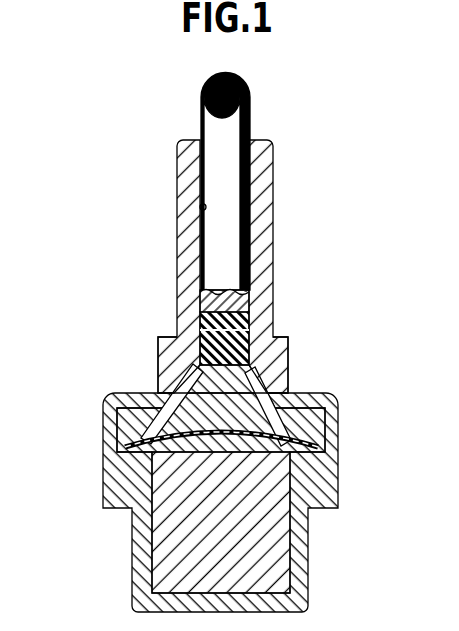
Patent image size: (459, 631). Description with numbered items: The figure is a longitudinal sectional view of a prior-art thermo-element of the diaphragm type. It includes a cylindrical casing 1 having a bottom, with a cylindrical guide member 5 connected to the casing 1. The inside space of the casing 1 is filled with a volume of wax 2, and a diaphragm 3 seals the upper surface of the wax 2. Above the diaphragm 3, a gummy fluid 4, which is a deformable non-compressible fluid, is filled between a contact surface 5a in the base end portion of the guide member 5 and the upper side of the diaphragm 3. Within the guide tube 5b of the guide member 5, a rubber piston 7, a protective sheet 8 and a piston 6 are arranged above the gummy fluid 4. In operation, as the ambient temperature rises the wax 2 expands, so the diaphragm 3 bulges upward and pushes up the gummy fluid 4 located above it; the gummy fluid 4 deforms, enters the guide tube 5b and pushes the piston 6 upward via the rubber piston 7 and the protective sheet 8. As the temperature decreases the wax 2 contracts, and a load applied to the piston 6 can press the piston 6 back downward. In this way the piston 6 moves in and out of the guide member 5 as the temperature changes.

The casing 1 is at (108, 470).
The wax 2 is at (173, 570).
The diaphragm 3 is at (155, 437).
The gummy fluid 4 is at (160, 388).
The guide member 5 is at (270, 352).
The contact surface 5a is at (272, 397).
The guide tube 5b is at (200, 207).
The piston 6 is at (217, 128).
The rubber piston 7 is at (200, 335).
The protective sheet 8 is at (250, 312).